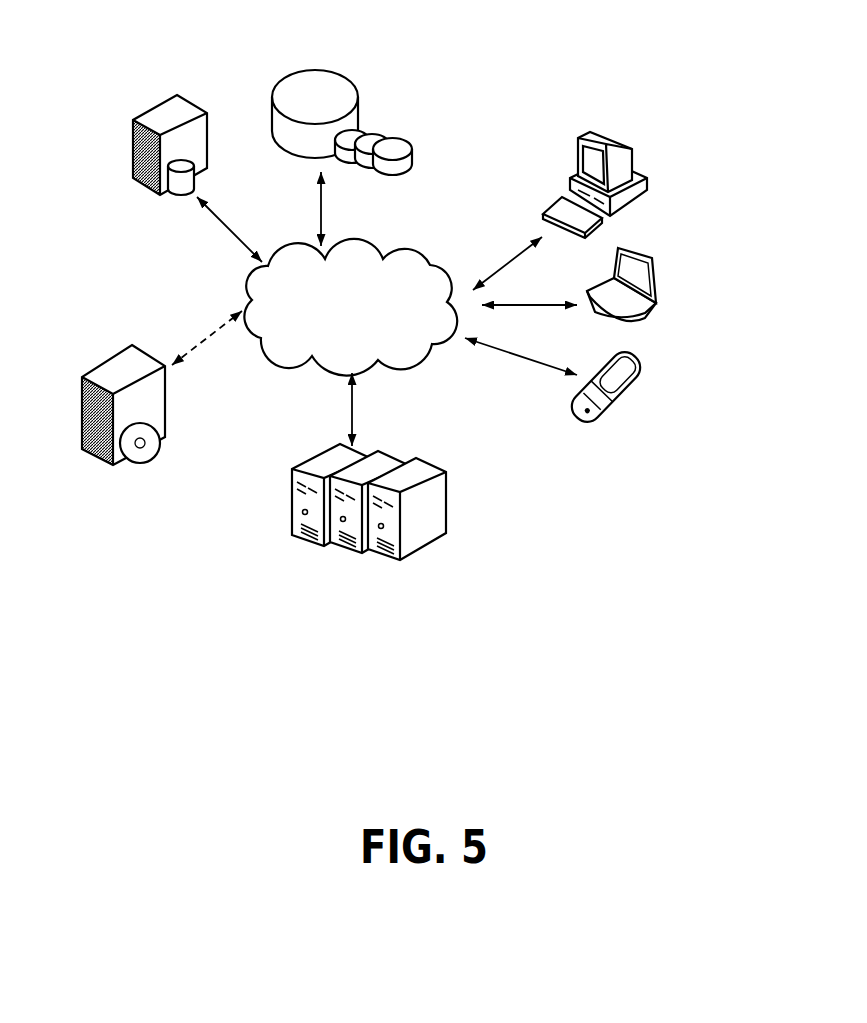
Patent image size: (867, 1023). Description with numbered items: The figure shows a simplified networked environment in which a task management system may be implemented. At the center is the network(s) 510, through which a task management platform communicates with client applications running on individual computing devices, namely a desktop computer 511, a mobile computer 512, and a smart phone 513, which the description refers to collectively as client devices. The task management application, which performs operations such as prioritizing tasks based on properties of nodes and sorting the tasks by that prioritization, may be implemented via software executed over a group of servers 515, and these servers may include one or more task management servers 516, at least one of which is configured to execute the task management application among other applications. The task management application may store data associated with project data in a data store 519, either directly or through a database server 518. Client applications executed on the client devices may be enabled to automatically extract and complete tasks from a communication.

The network(s) 510 is at (358, 238).
The desktop computer 511 is at (632, 126).
The mobile computer 512 is at (662, 250).
The smart phone 513 is at (637, 358).
The server computers 515 is at (317, 452).
The task management servers 516 is at (104, 356).
The database server 518 is at (171, 208).
The data store 519 is at (330, 50).